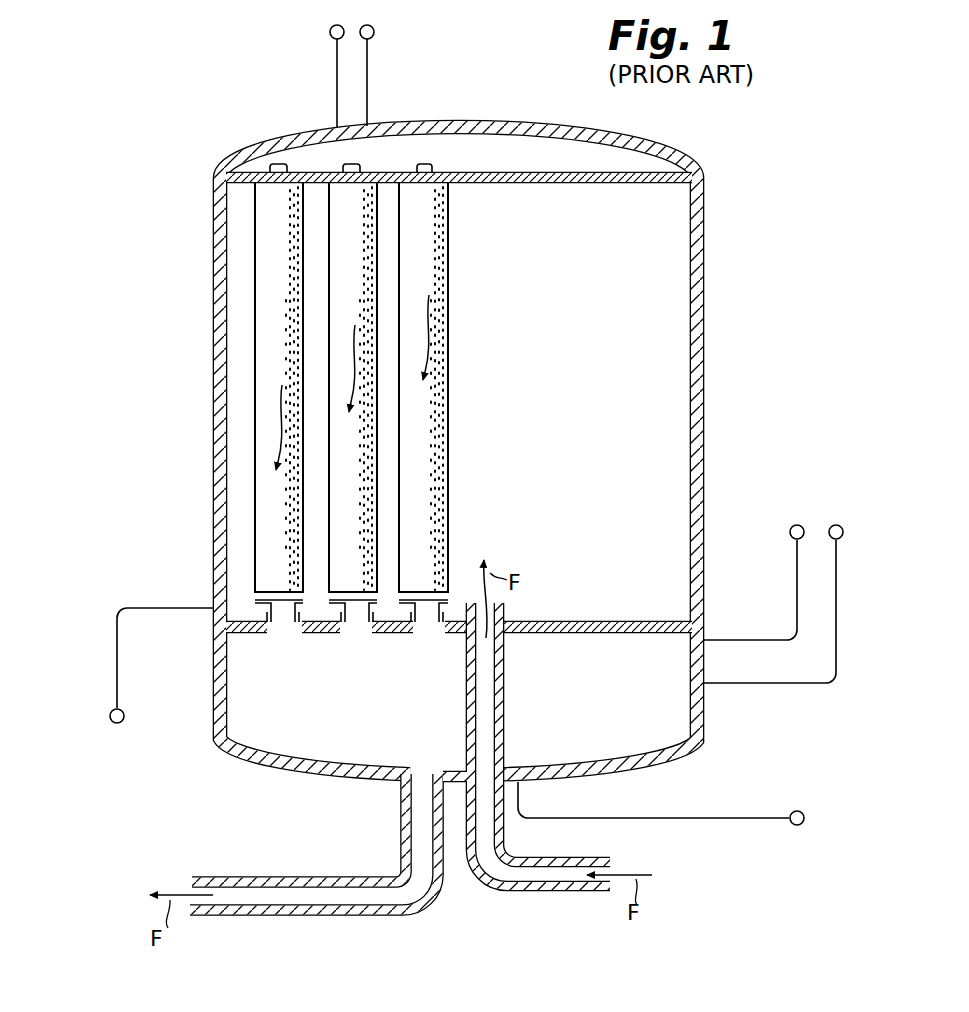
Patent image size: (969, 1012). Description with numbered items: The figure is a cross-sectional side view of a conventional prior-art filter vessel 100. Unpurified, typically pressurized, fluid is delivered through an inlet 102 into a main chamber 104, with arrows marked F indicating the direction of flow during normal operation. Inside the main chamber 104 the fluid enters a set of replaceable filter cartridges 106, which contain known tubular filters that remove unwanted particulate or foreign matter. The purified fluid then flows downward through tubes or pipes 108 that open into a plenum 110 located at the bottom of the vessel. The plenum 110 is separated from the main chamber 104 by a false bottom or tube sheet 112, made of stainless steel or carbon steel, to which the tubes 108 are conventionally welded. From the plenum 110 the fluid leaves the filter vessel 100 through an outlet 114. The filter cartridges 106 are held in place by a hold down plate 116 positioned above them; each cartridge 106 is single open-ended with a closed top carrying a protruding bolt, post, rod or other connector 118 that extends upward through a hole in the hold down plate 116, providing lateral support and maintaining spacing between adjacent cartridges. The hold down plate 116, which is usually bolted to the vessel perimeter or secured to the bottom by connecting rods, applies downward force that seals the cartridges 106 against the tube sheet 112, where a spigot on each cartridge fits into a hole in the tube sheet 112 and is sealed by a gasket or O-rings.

The filter vessel 100 is at (706, 333).
The inlet 102 is at (538, 892).
The main chamber 104 is at (668, 492).
The replaceable filter cartridges 106 is at (255, 254).
The tubes or pipes 108 is at (280, 633).
The plenum 110 is at (326, 752).
The tube sheet 112 is at (603, 633).
The outlet 114 is at (270, 898).
The hold down plate 116 is at (596, 184).
The connector 118 is at (433, 168).